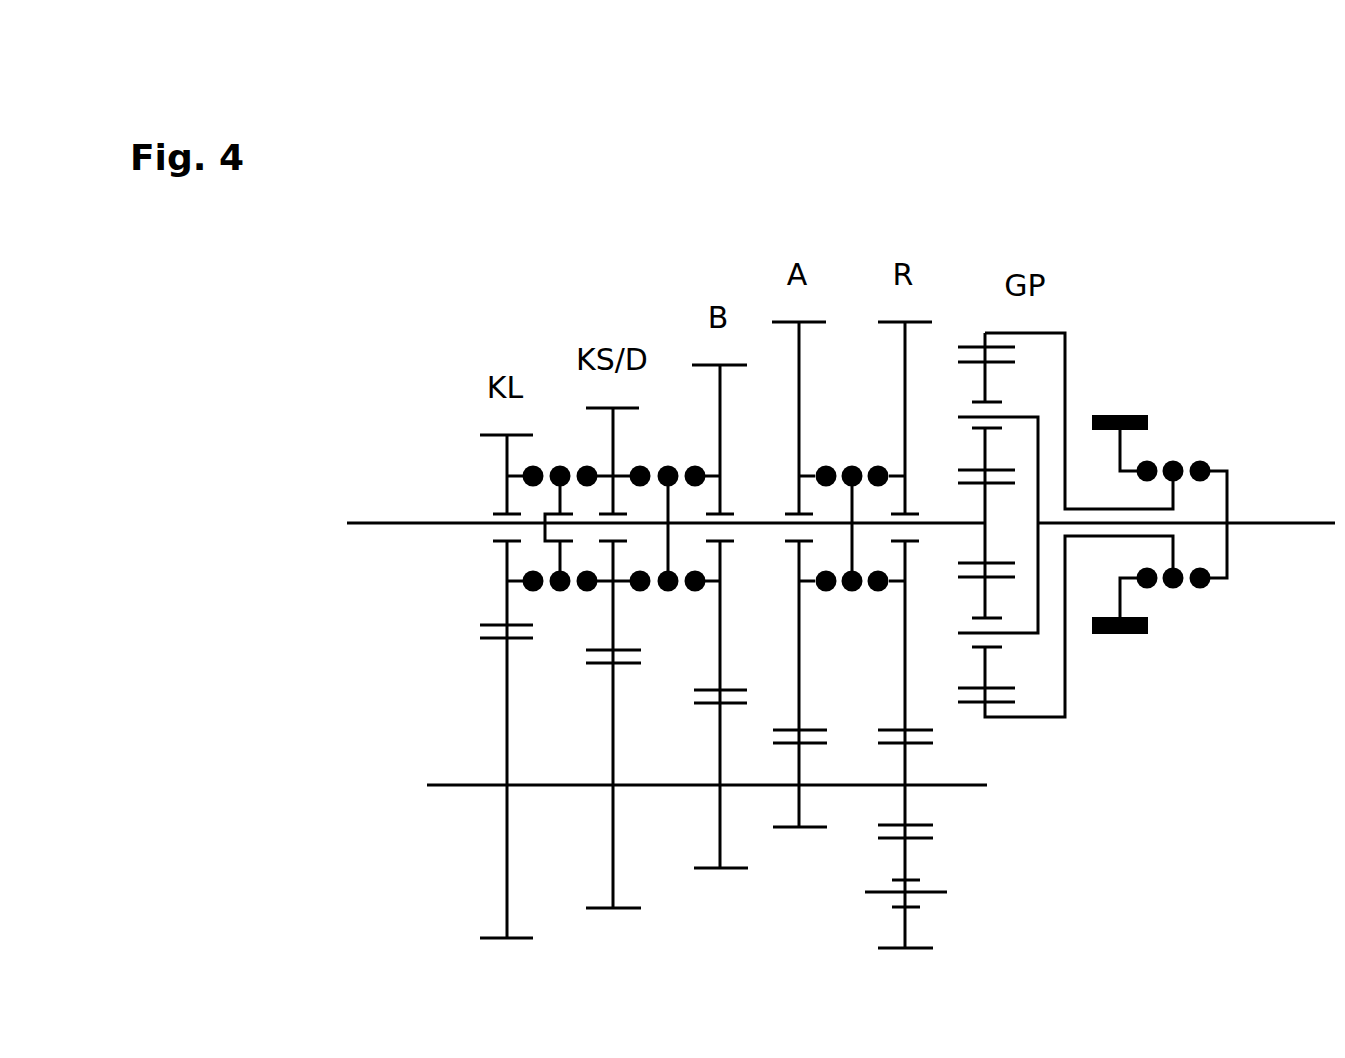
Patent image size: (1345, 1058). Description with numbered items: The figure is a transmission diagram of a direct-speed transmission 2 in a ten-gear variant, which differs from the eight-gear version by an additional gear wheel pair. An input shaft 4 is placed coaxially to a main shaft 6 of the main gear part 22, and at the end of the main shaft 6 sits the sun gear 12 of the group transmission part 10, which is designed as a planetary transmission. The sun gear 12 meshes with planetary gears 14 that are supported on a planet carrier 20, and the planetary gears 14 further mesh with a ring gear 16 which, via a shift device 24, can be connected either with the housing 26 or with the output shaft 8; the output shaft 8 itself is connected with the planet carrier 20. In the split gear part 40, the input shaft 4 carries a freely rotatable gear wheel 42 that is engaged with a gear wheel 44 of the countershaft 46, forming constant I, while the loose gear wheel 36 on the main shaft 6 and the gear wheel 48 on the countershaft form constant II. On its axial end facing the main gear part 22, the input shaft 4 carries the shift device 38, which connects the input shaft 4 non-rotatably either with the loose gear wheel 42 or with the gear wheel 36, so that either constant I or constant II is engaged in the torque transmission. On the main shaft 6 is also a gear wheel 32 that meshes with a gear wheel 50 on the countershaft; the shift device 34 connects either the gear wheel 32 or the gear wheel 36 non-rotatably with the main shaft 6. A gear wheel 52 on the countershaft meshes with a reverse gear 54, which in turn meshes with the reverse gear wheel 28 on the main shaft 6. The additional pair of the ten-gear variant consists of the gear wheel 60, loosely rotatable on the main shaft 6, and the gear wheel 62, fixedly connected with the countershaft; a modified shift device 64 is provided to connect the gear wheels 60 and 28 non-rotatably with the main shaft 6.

The transmission 2 is at (385, 423).
The input shaft 4 is at (397, 532).
The main shaft 6 is at (757, 521).
The output shaft 8 is at (1268, 524).
The group transmission part 10 is at (1017, 198).
The sun gear 12 is at (988, 550).
The planetary gears 14 is at (988, 387).
The ring gear 16 is at (988, 717).
The planet carrier 20 is at (1042, 437).
The main gear part 22 is at (783, 185).
The shift device 24 is at (1174, 589).
The housing 26 is at (1123, 448).
The reverse gear wheel 28 is at (906, 378).
The gear wheel 32 is at (722, 438).
The shift device 34 is at (668, 591).
The gear wheel 36 is at (618, 427).
The shift device 38 is at (560, 590).
The split gear part 40 is at (556, 195).
The gear wheel 42 is at (503, 453).
The gear wheel 44 is at (503, 842).
The countershaft 46 is at (452, 788).
The gear wheel 48 is at (610, 852).
The gear wheel 50 is at (722, 847).
The gear wheel 52 is at (908, 770).
The reverse gear 54 is at (908, 860).
The gear wheel 60 is at (795, 378).
The gear wheel 62 is at (797, 830).
The shift device 64 is at (852, 592).